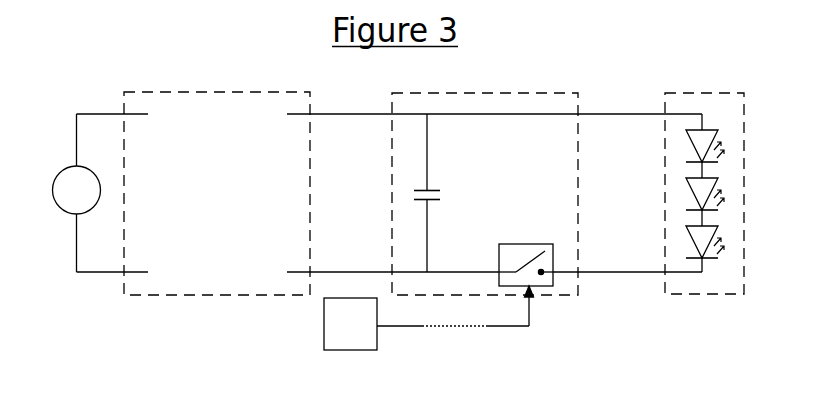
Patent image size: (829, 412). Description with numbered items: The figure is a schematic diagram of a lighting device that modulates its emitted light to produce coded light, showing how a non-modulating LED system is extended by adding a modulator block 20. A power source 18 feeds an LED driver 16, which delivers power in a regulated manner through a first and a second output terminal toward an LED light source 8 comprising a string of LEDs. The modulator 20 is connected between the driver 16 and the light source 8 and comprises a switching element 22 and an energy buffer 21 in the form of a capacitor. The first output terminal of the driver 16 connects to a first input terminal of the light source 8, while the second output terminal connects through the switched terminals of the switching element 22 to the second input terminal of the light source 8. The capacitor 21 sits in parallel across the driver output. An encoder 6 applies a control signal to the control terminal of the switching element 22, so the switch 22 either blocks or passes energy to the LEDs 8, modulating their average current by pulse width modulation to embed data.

The LED driver 16 is at (153, 92).
The power source 18 is at (66, 212).
The modulator block 20 is at (527, 92).
The energy buffer 21 is at (433, 190).
The switching element 22 is at (533, 244).
The encoder 6 is at (345, 336).
The LED light source 8 is at (705, 92).